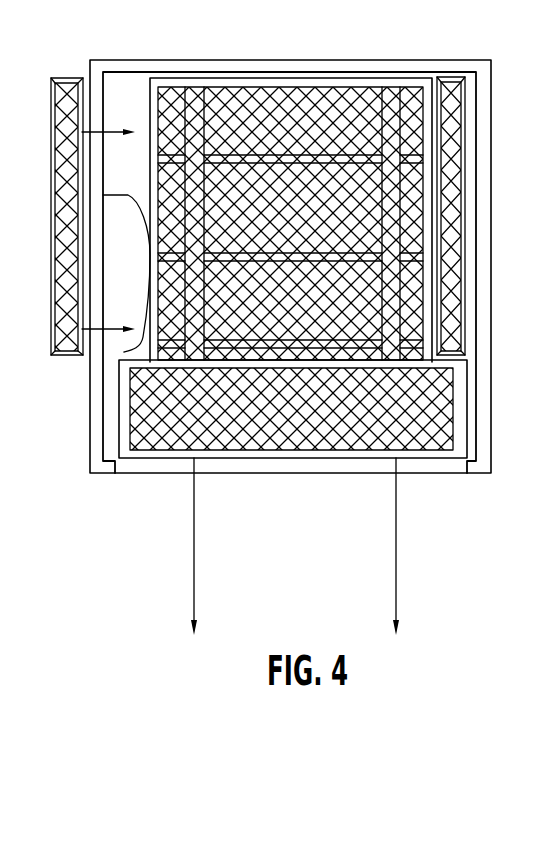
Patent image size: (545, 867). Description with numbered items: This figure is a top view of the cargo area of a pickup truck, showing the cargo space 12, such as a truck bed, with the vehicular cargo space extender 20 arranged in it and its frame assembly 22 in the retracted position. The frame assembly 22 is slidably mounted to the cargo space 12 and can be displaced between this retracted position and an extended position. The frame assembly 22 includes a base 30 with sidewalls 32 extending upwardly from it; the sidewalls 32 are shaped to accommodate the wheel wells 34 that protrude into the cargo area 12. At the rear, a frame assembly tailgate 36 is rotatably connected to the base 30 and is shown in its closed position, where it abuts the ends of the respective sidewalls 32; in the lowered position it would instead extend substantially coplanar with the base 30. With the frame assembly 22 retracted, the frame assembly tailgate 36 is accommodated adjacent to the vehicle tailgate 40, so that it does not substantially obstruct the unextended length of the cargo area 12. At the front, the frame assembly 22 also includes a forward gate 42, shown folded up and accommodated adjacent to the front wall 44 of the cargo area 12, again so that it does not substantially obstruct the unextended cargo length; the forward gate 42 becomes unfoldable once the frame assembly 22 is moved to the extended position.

The cargo space 12 is at (133, 77).
The vehicular cargo space extender 20 is at (118, 598).
The frame assembly 22 is at (108, 532).
The base 30 is at (350, 102).
The sidewalls 32 is at (156, 339).
The wheel wells 34 is at (130, 218).
The frame assembly tailgate 36 is at (437, 450).
The vehicle tailgate 40 is at (253, 474).
The forward gate 42 is at (260, 80).
The front wall 44 is at (325, 66).